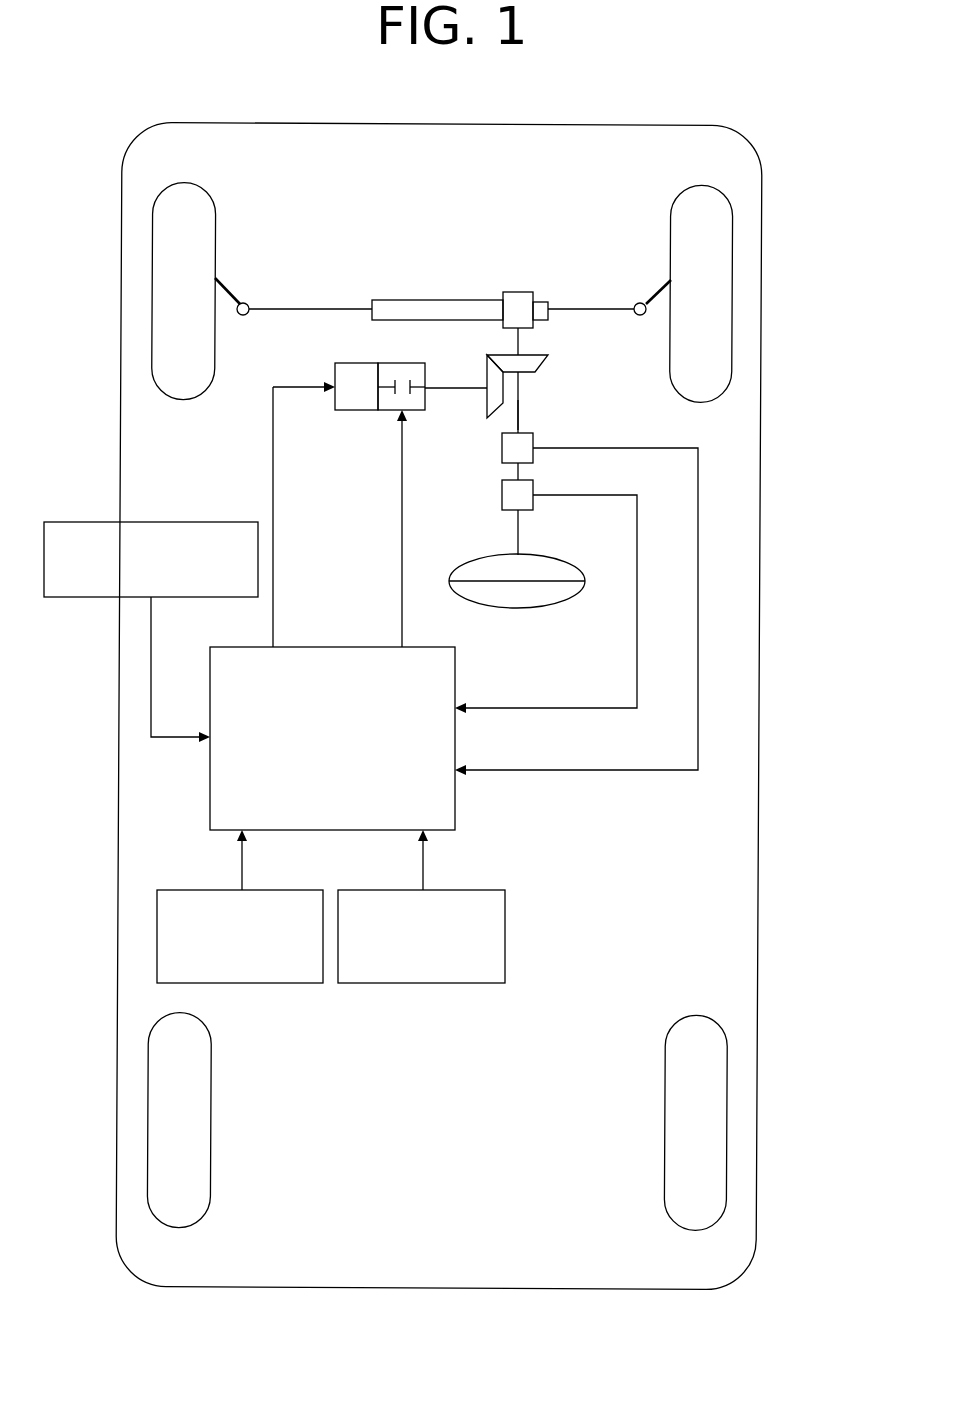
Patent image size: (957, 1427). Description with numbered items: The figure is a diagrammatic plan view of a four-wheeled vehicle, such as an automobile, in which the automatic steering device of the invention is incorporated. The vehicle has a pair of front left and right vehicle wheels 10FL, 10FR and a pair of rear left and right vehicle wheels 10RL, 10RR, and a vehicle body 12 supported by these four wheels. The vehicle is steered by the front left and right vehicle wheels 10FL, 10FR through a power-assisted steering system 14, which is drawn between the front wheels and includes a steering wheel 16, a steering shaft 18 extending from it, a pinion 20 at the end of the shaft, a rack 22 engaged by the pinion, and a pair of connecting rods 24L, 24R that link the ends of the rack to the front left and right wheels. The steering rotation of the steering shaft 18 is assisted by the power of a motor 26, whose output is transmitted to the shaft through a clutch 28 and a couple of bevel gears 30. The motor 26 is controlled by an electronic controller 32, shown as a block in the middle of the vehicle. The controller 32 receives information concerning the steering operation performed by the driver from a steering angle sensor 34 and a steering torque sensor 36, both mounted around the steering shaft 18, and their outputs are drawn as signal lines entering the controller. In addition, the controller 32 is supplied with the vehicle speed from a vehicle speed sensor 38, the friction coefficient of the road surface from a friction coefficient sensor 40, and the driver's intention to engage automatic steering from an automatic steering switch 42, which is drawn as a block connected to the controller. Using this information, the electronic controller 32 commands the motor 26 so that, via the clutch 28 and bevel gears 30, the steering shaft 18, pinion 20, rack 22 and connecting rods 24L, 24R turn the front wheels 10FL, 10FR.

The front left vehicle wheel 10FL is at (151, 308).
The front right vehicle wheel 10FR is at (732, 309).
The rear left vehicle wheel 10RL is at (147, 1125).
The rear right vehicle wheel 10RR is at (726, 1133).
The vehicle body 12 is at (762, 466).
The power-assisted steering system 14 is at (560, 381).
The steering wheel 16 is at (535, 607).
The steering shaft 18 is at (519, 417).
The pinion 20 is at (517, 292).
The rack 22 is at (428, 300).
The left connecting rod 24L is at (229, 292).
The right connecting rod 24R is at (660, 288).
The motor 26 is at (342, 363).
The clutch 28 is at (388, 362).
The bevel gears 30 is at (508, 354).
The electronic controller 32 is at (352, 764).
The steering angle sensor 34 is at (536, 500).
The steering torque sensor 36 is at (499, 440).
The vehicle speed sensor 38 is at (240, 983).
The friction coefficient sensor 40 is at (421, 983).
The automatic steering switch 42 is at (175, 522).